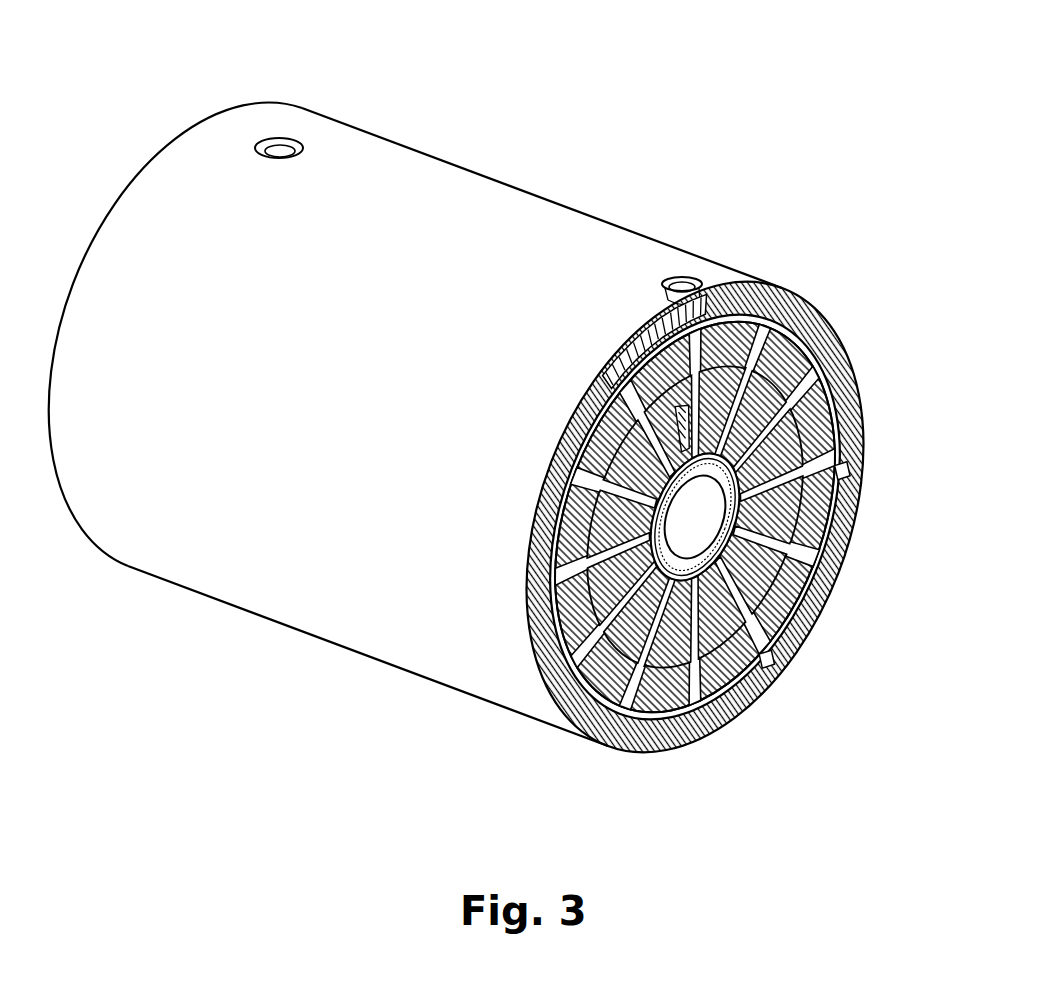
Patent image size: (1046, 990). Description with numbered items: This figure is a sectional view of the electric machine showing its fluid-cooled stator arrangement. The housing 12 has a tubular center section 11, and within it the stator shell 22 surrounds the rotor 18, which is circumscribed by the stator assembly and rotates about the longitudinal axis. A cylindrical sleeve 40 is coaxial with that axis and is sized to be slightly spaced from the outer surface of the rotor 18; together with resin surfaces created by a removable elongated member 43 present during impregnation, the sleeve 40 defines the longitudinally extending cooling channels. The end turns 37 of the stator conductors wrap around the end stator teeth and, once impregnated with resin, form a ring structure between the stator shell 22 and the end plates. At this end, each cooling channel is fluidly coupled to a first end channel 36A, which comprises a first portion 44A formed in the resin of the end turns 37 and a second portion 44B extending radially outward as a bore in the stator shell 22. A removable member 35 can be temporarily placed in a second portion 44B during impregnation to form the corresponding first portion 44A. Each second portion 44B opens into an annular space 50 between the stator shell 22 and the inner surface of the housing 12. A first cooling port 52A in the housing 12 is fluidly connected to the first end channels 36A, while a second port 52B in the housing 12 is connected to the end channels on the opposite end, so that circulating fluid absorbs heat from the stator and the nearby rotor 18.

The tubular center section 11 is at (607, 217).
The housing 12 is at (525, 187).
The rotor 18 is at (724, 573).
The stator shell 22 is at (708, 318).
The removable member 35 is at (668, 468).
The first end channel 36A is at (847, 454).
The end turns 37 is at (645, 440).
The cylindrical sleeve 40 is at (660, 523).
The removable elongated member 43 is at (652, 503).
The first portion 44A is at (790, 594).
The second portion 44B is at (797, 547).
The annular space 50 is at (687, 315).
The first cooling port 52A is at (690, 268).
The second port 52B is at (284, 138).